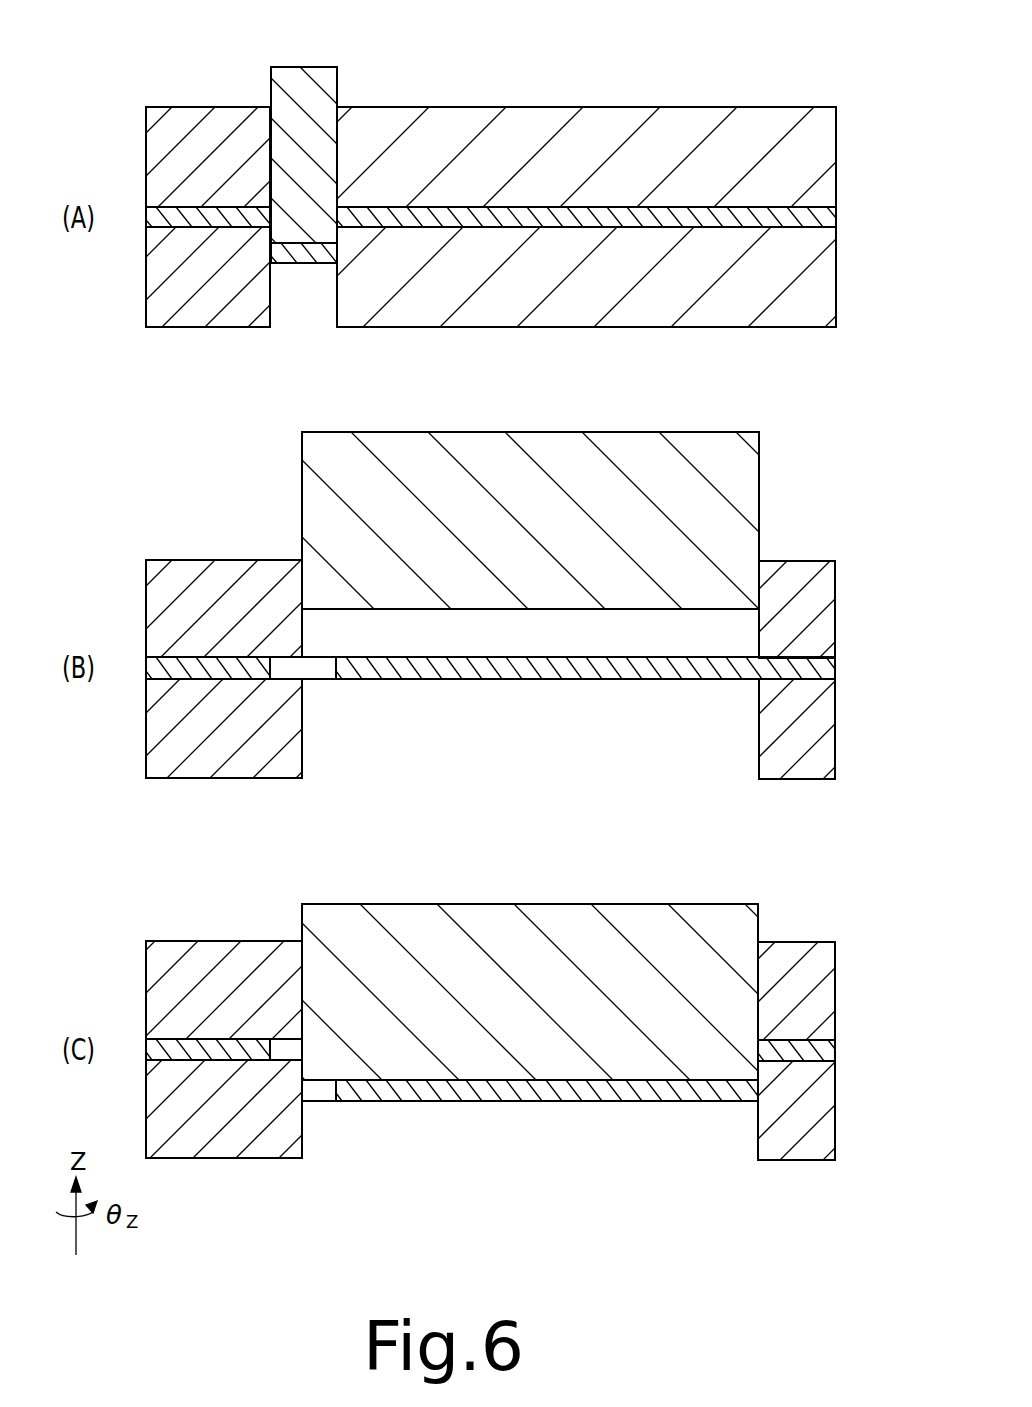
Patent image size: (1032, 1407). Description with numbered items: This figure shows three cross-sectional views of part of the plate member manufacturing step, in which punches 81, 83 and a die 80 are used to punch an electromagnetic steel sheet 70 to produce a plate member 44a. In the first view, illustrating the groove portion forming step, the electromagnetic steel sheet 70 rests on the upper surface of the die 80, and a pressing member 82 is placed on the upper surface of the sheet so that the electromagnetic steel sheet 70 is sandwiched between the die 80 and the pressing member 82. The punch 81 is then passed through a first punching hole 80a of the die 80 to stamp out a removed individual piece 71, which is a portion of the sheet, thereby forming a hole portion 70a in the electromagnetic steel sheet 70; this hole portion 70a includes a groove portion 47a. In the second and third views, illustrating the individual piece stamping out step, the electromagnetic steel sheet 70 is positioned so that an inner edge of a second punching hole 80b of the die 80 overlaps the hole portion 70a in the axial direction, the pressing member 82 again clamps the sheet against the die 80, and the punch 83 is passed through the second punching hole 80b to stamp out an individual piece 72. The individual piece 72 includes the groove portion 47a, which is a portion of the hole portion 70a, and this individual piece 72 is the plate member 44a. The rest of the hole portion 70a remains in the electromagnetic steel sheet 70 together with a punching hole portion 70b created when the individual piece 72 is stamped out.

The electromagnetic steel sheet 70 is at (849, 213).
The hole portion 70a is at (287, 218).
The punching hole portion 70b is at (757, 1045).
The removed individual piece 71 is at (303, 266).
The individual piece 72 is at (492, 1113).
The die 80 is at (727, 313).
The first punching hole 80a is at (332, 308).
The second punching hole 80b is at (756, 764).
The punch 81 is at (292, 72).
The pressing member 82 is at (190, 118).
The punch 83 is at (556, 440).
The groove portion 47a is at (332, 214).
The plate member 44a is at (530, 1133).